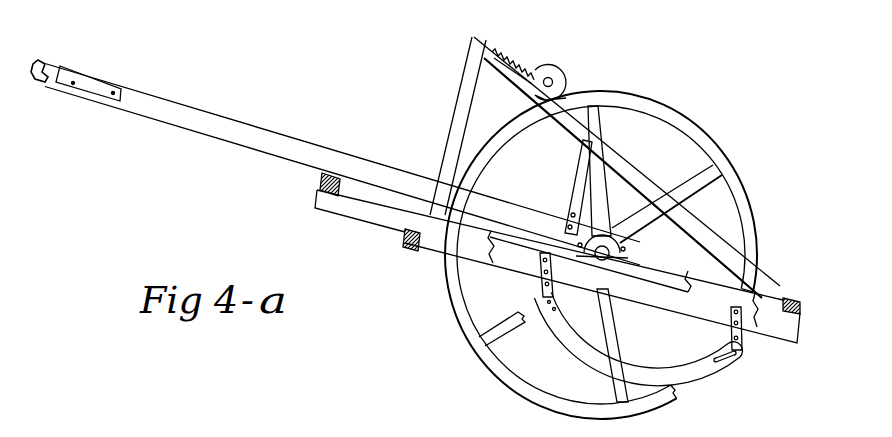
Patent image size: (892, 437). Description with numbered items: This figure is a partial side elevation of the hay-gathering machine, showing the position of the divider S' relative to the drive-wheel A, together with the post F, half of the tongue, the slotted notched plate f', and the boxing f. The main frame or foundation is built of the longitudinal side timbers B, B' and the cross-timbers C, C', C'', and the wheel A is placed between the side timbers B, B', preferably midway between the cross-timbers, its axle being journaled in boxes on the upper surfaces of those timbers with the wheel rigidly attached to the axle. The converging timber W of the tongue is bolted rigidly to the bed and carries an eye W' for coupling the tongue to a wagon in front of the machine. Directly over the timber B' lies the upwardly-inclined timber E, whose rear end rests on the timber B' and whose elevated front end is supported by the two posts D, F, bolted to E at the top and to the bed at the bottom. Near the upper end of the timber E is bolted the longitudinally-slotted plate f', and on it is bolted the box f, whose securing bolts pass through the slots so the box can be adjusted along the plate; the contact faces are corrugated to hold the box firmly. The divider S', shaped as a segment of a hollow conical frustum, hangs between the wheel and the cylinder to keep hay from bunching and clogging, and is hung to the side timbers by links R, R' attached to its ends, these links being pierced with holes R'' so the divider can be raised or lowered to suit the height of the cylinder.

The tongue timber W is at (342, 165).
The eye W' is at (43, 64).
The post D is at (458, 126).
The drive-wheel A is at (523, 122).
The upwardly-inclined timber E is at (623, 178).
The slotted notched plate f' is at (513, 62).
The box f is at (547, 75).
The post F is at (578, 187).
The side timber B' is at (549, 252).
The side timber B is at (602, 286).
The cross-timber C'' is at (320, 184).
The cross-timber C' is at (407, 250).
The cross-timber C is at (794, 298).
The holes R'' is at (554, 282).
The link R' is at (626, 317).
The link R is at (735, 353).
The divider S' is at (638, 338).